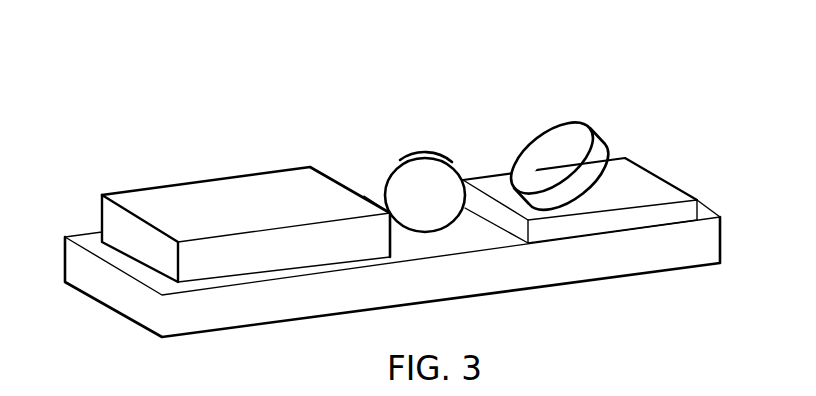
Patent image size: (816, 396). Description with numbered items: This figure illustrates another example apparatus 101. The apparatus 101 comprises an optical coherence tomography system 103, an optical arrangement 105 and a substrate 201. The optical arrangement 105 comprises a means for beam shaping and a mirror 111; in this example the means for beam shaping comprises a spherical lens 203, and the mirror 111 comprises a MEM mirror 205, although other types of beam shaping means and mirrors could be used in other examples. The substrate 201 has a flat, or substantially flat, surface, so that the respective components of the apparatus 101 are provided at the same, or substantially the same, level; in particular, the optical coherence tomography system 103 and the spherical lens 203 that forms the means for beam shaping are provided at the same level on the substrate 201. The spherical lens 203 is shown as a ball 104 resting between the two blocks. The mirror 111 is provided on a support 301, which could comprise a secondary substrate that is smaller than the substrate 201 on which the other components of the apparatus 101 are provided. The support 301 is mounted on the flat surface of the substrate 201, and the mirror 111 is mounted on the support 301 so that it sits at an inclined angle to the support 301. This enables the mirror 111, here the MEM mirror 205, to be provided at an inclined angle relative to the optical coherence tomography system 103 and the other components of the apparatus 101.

The apparatus 101 is at (592, 135).
The optical coherence tomography system 103 is at (276, 218).
The ball lens 104 is at (412, 158).
The optical arrangement 105 is at (522, 128).
The mirror 111 is at (553, 128).
The substrate 201 is at (303, 313).
The spherical lens 203 is at (438, 160).
The MEM mirror 205 is at (600, 138).
The support 301 is at (683, 182).